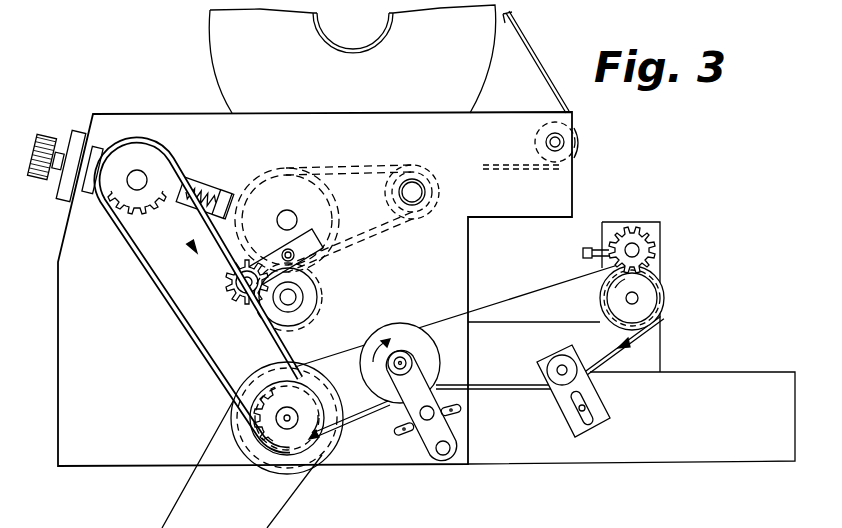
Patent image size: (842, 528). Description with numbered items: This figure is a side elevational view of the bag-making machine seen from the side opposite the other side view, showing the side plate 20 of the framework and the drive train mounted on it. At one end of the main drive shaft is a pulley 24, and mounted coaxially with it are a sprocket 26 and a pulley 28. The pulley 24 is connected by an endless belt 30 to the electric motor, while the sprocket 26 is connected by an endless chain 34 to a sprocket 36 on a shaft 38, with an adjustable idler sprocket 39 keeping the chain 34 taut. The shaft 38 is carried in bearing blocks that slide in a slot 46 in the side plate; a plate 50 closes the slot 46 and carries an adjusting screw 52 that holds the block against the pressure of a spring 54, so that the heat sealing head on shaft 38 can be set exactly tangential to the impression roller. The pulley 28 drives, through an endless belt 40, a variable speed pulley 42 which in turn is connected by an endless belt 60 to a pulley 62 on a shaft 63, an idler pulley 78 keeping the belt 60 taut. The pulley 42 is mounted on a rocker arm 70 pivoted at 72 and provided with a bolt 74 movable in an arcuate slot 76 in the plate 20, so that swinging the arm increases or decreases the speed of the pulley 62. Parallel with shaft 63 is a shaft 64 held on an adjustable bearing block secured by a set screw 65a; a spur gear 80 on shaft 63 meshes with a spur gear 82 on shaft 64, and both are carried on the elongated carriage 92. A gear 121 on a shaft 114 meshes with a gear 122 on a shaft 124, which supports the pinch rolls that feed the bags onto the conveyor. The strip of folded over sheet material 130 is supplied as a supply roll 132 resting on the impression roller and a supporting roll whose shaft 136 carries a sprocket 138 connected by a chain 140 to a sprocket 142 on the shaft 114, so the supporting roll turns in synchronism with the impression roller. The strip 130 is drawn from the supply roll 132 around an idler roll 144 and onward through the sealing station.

The side plate 20 is at (127, 398).
The pulley 24 is at (271, 474).
The sprocket 26 is at (241, 397).
The pulley 28 is at (297, 392).
The endless belt 30 is at (177, 498).
The endless chain 34 is at (160, 289).
The sprocket 36 is at (140, 160).
The shaft 38 is at (146, 173).
The adjustable idler sprocket 39 is at (231, 281).
The endless belt 40 is at (365, 417).
The variable speed pulley 42 is at (403, 335).
The slot 46 is at (98, 157).
The plate 50 is at (78, 148).
The adjusting screw 52 is at (42, 146).
The spring 54 is at (216, 184).
The endless belt 60 is at (515, 298).
The pulley 62 is at (650, 290).
The shaft 63 is at (640, 300).
The shaft 64 is at (640, 247).
The set screw 65a is at (583, 248).
The rocker arm 70 is at (431, 401).
The pivot 72 is at (443, 456).
The bolt 74 is at (426, 419).
The arcuate slot 76 is at (458, 412).
The idler pulley 78 is at (555, 358).
The spur gear 80 is at (620, 300).
The spur gear 82 is at (645, 253).
The elongated carriage 92 is at (665, 356).
The shaft 114 is at (284, 220).
The gear 121 is at (326, 216).
The gear 122 is at (303, 297).
The shaft 124 is at (294, 294).
The strip of folded over sheet material 130 is at (530, 44).
The supply roll 132 is at (423, 40).
The shaft 136 is at (428, 190).
The sprocket 138 is at (418, 192).
The chain 140 is at (365, 163).
The sprocket 142 is at (307, 193).
The idler roll 144 is at (578, 139).